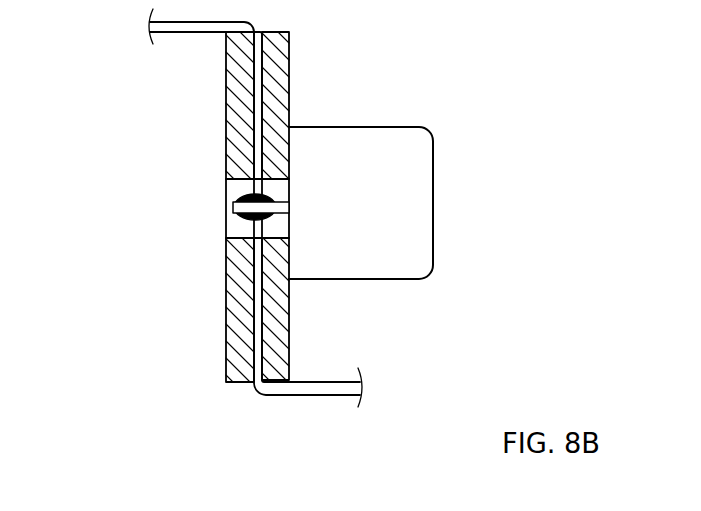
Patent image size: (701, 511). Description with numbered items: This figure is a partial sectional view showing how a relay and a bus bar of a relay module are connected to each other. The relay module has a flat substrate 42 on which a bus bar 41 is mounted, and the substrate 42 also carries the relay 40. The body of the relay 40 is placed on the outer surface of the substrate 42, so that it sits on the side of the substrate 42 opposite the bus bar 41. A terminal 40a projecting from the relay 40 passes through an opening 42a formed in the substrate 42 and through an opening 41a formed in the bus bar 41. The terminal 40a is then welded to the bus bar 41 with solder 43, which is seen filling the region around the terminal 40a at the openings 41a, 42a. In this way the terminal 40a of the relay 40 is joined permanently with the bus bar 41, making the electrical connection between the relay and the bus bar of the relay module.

The relay 40 is at (390, 152).
The terminal 40a is at (233, 208).
The bus bar 41 is at (258, 353).
The opening 41a is at (228, 188).
The substrate 42 is at (278, 112).
The opening 42a is at (272, 238).
The solder 43 is at (230, 230).